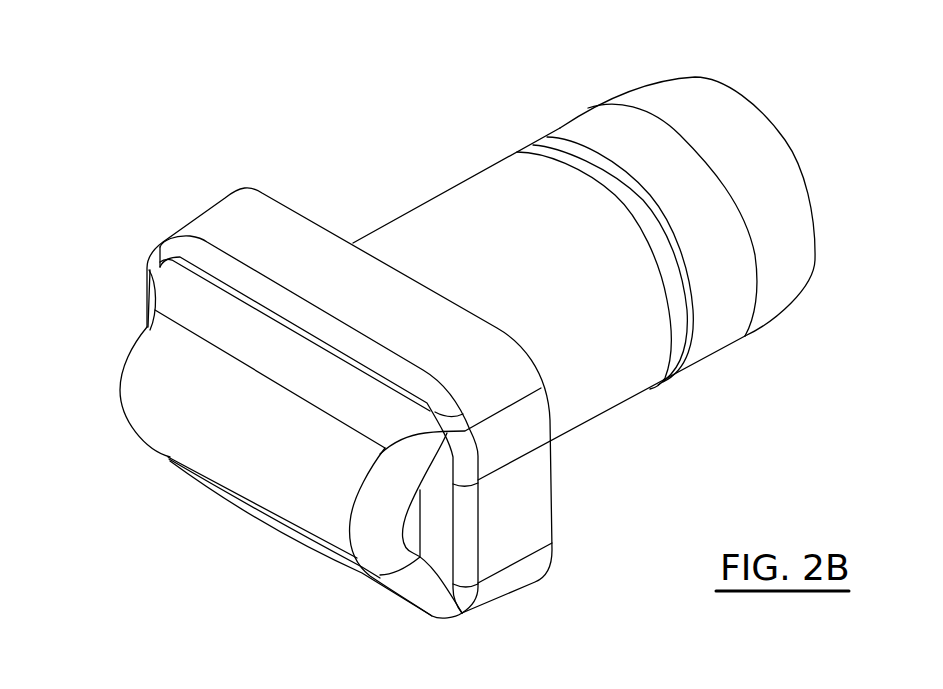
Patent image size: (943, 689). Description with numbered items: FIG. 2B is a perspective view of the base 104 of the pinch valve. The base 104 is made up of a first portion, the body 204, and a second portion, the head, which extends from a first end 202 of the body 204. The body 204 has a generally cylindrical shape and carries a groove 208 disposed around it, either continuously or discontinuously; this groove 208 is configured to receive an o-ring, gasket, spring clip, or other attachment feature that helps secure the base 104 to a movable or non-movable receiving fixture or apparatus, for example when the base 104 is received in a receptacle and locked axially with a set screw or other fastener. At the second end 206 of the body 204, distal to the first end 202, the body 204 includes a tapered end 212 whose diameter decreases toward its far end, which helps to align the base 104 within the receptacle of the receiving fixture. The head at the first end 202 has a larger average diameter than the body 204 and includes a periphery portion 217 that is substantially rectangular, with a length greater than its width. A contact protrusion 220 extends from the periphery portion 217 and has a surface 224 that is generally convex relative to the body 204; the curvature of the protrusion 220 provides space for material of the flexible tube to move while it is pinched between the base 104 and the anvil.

The base 104 is at (266, 138).
The first end 202 is at (102, 276).
The body 204 is at (458, 184).
The second end 206 is at (627, 57).
The groove 208 is at (673, 350).
The tapered end 212 is at (790, 187).
The periphery portion 217 is at (527, 500).
The protrusion 220 is at (243, 482).
The surface 224 is at (347, 535).